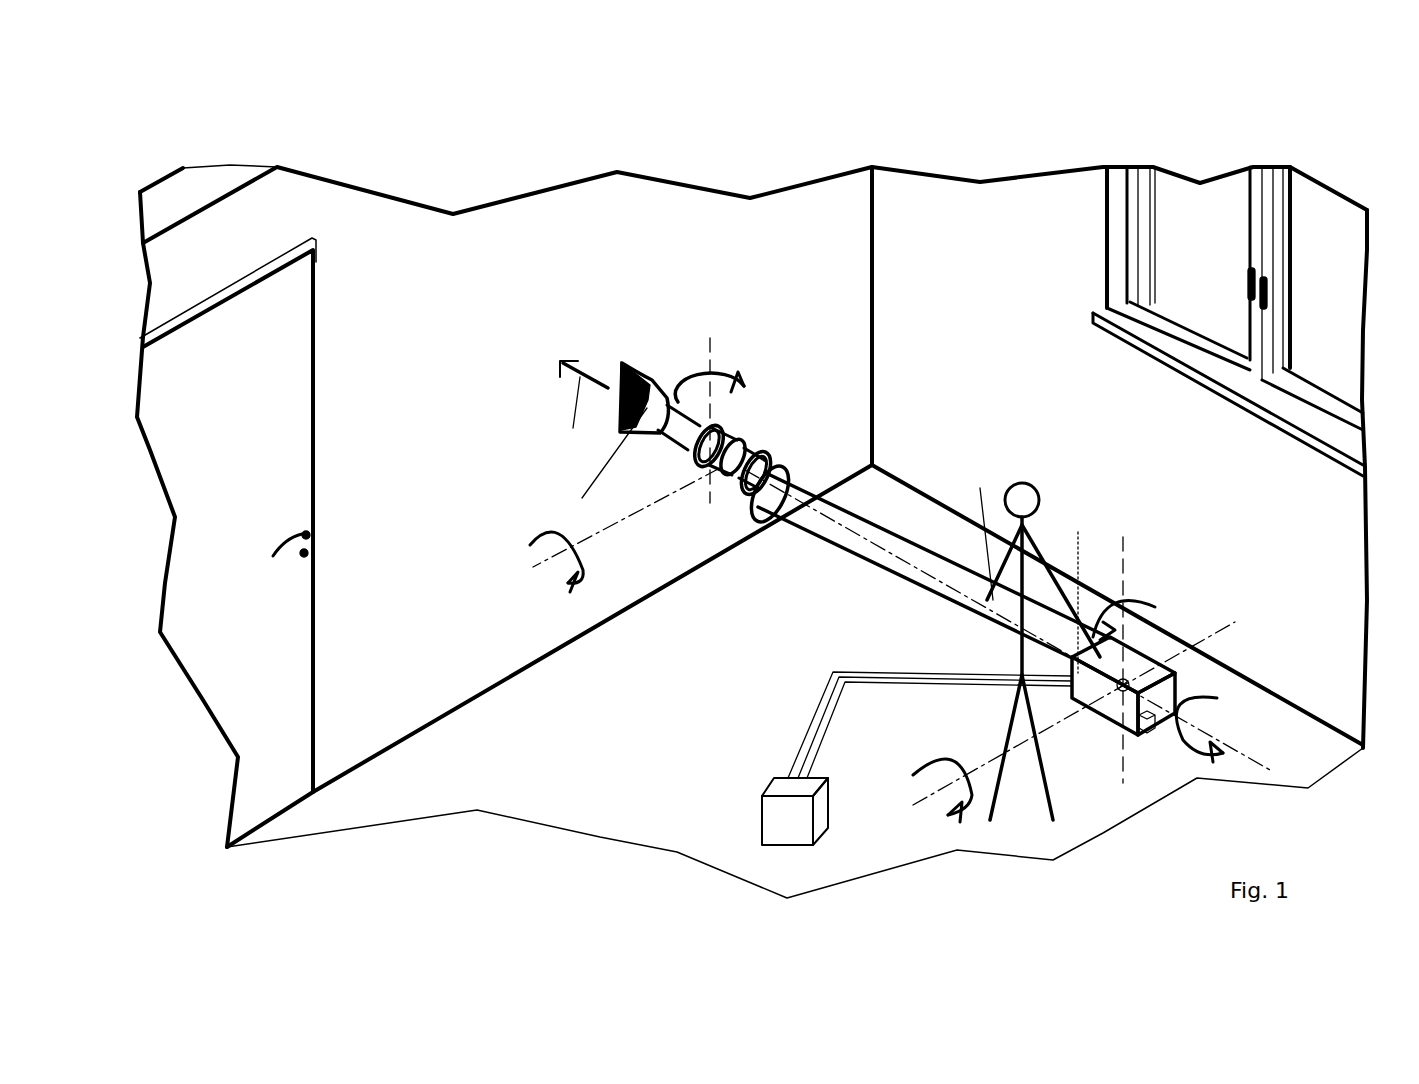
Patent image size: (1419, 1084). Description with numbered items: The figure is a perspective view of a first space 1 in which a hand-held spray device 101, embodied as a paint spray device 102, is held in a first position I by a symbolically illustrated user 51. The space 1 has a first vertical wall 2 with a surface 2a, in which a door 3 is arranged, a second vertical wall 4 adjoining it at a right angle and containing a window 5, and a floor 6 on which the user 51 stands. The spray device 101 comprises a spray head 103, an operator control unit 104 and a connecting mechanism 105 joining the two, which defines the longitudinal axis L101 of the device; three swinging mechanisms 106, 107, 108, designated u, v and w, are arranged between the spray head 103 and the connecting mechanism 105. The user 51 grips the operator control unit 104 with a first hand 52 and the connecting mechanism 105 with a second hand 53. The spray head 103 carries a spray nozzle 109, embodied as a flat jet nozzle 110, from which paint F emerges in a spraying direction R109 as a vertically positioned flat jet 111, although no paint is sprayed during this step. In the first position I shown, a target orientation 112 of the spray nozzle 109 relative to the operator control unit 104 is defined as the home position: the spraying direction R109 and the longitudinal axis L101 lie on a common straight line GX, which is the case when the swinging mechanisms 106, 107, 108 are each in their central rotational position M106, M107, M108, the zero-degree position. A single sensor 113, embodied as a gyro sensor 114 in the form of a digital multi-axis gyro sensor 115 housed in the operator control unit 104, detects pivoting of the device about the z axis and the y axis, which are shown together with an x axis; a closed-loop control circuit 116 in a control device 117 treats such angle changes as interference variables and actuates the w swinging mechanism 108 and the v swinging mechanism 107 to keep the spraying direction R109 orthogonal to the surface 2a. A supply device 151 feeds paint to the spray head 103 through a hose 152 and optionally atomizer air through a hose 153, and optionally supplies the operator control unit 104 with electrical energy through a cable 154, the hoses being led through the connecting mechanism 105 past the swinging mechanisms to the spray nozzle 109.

The first space 1 is at (1020, 150).
The first vertical wall 2 is at (338, 637).
The surface of the first vertical wall 2a is at (280, 212).
The door 3 is at (222, 600).
The second vertical wall 4 is at (1342, 707).
The window 5 is at (1384, 460).
The floor 6 is at (332, 818).
The user 51 is at (1078, 532).
The first hand 52 is at (1110, 542).
The second hand 53 is at (1150, 320).
The longitudinal axis L101 is at (1097, 318).
The hand-held spray device 101 is at (778, 597).
The paint spray device 102 is at (760, 535).
The spray head 103 is at (672, 400).
The operator control unit 104 is at (1140, 743).
The connecting mechanism 105 is at (980, 488).
The u swinging mechanism 106 is at (762, 472).
The central rotational position of the u swinging mechanism M106 is at (805, 472).
The v swinging mechanism 107 is at (793, 437).
The central rotational position of the v swinging mechanism M107 is at (805, 462).
The w swinging mechanism 108 is at (727, 418).
The central rotational position of the w swinging mechanism M108 is at (762, 423).
The spray nozzle 109 is at (653, 392).
The flat jet nozzle 110 is at (563, 242).
The flat jet 111 is at (658, 358).
The target orientation 112 is at (581, 632).
The sensor 113 is at (1120, 692).
The gyro sensor 114 is at (1046, 817).
The digital multi-axis gyro sensor 115 is at (1046, 817).
The closed-loop control circuit 116 is at (1143, 720).
The control device 117 is at (1157, 727).
The supply device 151 is at (790, 823).
The hose 152 is at (833, 698).
The hose 153 is at (838, 688).
The cable 154 is at (832, 694).
The spraying direction R109 is at (573, 428).
The paint F is at (613, 348).
The u swinging axis designation u is at (582, 498).
The v swinging axis designation v is at (533, 568).
The w swinging axis designation w is at (709, 352).
The x axis x is at (1263, 762).
The y axis y is at (1200, 641).
The z axis z is at (1123, 537).
The first position I is at (830, 568).
The common straight line GX is at (828, 597).